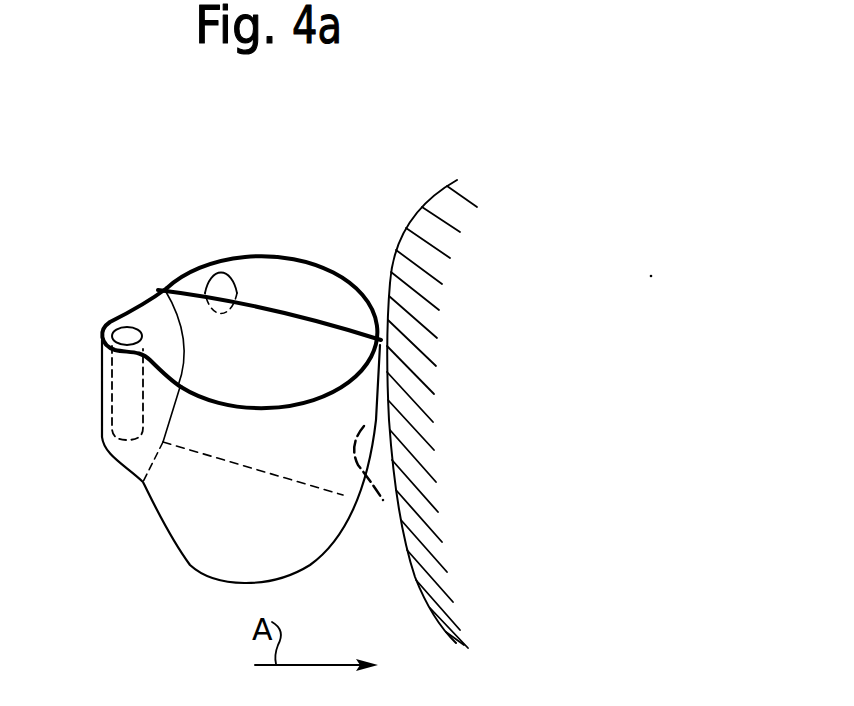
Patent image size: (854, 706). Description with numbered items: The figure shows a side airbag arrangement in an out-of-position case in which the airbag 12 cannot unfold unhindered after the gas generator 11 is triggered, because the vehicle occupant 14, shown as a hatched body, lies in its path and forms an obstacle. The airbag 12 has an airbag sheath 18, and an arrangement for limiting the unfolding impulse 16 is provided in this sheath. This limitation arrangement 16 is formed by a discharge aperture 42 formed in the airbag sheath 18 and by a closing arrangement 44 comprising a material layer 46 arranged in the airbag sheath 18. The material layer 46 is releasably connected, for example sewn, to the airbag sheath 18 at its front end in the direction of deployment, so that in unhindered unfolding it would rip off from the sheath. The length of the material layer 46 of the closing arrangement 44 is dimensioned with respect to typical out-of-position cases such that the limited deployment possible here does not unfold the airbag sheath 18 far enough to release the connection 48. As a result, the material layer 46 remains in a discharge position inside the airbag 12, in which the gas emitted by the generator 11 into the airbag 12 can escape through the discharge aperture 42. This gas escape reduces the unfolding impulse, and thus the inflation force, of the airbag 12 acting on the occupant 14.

The gas generator 11 is at (120, 382).
The airbag 12 is at (144, 490).
The vehicle occupant 14 is at (408, 403).
The arrangement for limiting the unfolding impulse 16 is at (347, 173).
The airbag sheath 18 is at (357, 280).
The discharge aperture 42 is at (220, 288).
The closing arrangement 44 is at (259, 307).
The material layer 46 is at (290, 332).
The connection 48 is at (385, 504).